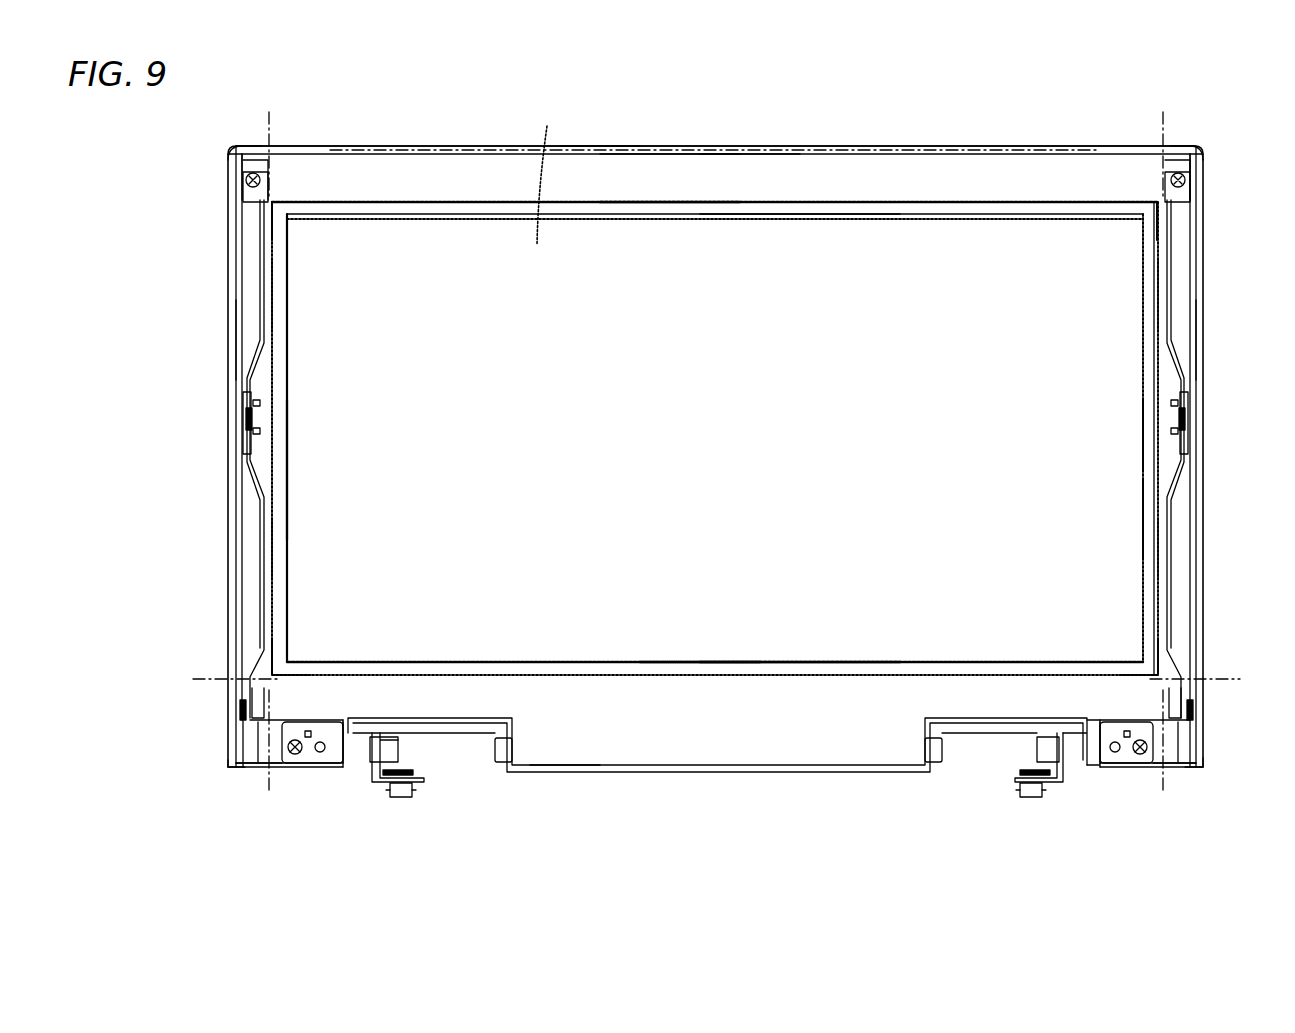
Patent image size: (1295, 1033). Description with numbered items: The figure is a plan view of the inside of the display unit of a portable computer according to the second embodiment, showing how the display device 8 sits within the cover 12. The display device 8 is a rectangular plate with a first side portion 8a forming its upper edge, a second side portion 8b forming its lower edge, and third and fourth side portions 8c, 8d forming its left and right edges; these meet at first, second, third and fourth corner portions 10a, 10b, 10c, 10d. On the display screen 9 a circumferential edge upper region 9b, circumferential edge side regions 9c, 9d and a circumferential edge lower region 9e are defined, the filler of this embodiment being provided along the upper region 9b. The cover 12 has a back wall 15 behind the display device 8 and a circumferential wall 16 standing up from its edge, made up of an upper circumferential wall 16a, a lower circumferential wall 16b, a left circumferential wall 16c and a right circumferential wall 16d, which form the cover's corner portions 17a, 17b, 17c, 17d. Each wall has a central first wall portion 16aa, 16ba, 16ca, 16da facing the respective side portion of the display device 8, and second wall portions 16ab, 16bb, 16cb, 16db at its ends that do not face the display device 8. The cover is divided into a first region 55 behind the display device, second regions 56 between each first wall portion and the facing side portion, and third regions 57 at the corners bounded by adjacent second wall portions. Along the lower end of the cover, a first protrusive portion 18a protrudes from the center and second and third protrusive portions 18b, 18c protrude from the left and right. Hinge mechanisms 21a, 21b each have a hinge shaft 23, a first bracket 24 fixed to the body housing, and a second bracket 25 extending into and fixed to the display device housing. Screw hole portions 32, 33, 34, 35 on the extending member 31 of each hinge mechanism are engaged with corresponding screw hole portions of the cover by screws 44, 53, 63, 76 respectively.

The display device 8 is at (910, 232).
The first side portion 8a is at (672, 202).
The second side portion 8b is at (700, 682).
The third side portion 8c is at (262, 432).
The fourth side portion 8d is at (1166, 455).
The display screen 9 is at (715, 440).
The circumferential edge upper region 9b is at (812, 219).
The circumferential edge side region 9c is at (1140, 515).
The circumferential edge side region 9d is at (780, 660).
The circumferential edge lower region 9e is at (285, 488).
The first corner portion 10a is at (1142, 216).
The second corner portion 10b is at (290, 216).
The third corner portion 10c is at (280, 662).
The fourth corner portion 10d is at (1150, 662).
The cover 12 is at (752, 172).
The back wall 15 is at (600, 155).
The circumferential wall 16 is at (422, 146).
The upper circumferential wall 16a is at (831, 146).
The first wall portion 16aa is at (668, 150).
The second wall portion 16ab is at (252, 150).
The lower circumferential wall 16b is at (624, 778).
The first wall portion 16ba is at (708, 772).
The second wall portion 16bb is at (246, 770).
The left circumferential wall 16c is at (226, 590).
The first wall portion 16ca is at (238, 340).
The second wall portion 16cb is at (240, 176).
The right circumferential wall 16d is at (1206, 565).
The first wall portion 16da is at (1194, 360).
The second wall portion 16db is at (1198, 176).
The first corner portion 17a is at (1199, 152).
The second corner portion 17b is at (231, 152).
The third corner portion 17c is at (231, 768).
The fourth corner portion 17d is at (1196, 770).
The first protrusive portion 18a is at (560, 770).
The second protrusive portion 18b is at (335, 762).
The third protrusive portion 18c is at (1105, 762).
The hinge mechanism 21a is at (390, 736).
The hinge mechanism 21b is at (1046, 736).
The hinge shaft 23 is at (372, 764).
The first bracket 24 is at (420, 783).
The second bracket 25 is at (290, 545).
The extending member 31 is at (274, 292).
The screw hole portion 32 is at (262, 702).
The screw hole portion 33 is at (270, 195).
The screw hole portion 34 is at (245, 415).
The screw hole portion 35 is at (307, 758).
The screw 44 is at (240, 706).
The screw 53 is at (250, 188).
The first region 55 is at (540, 174).
The second region 56 is at (472, 155).
The third region 57 is at (266, 170).
The screw 63 is at (245, 445).
The screw 76 is at (298, 745).